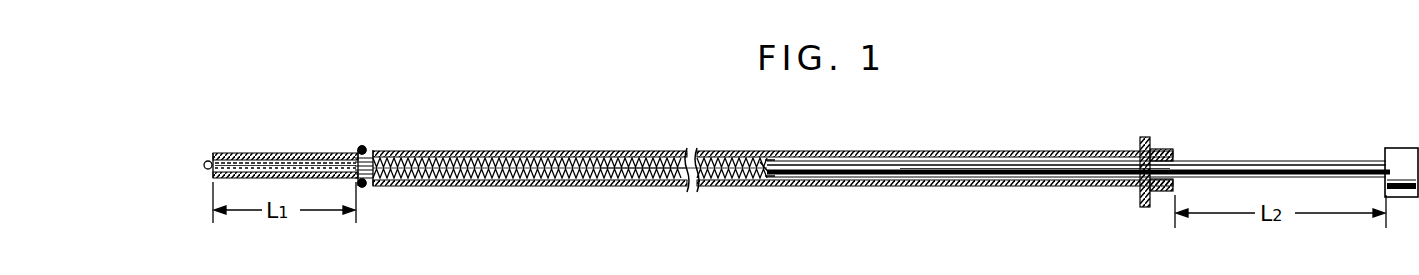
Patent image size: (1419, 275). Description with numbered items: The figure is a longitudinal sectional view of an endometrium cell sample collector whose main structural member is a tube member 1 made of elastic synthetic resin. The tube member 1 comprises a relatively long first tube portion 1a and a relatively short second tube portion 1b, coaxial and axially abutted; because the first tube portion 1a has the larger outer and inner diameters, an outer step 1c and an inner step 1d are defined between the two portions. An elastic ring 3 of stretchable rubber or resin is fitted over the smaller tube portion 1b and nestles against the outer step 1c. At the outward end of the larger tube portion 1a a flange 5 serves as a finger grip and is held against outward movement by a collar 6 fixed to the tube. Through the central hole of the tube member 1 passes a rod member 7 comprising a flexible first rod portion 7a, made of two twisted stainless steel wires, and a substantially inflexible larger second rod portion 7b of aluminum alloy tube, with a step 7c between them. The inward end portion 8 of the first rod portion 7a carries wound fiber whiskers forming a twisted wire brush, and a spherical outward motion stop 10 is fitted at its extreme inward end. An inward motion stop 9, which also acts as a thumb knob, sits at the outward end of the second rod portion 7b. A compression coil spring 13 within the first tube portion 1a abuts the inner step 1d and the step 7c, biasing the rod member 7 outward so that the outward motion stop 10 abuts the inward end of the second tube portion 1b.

The tube member 1 is at (637, 150).
The first tube portion 1a is at (751, 151).
The second tube portion 1b is at (314, 153).
The outer step 1c is at (367, 148).
The inner step 1d is at (370, 186).
The elastic ring 3 is at (359, 148).
The flange 5 is at (1144, 137).
The collar 6 is at (1168, 150).
The rod member 7 is at (838, 178).
The first rod portion 7a is at (633, 181).
The second rod portion 7b is at (955, 182).
The step 7c is at (762, 182).
The end portion 8 is at (270, 153).
The inward motion stop 9 is at (1393, 148).
The outward motion stop 10 is at (210, 160).
The compression coil spring 13 is at (531, 185).